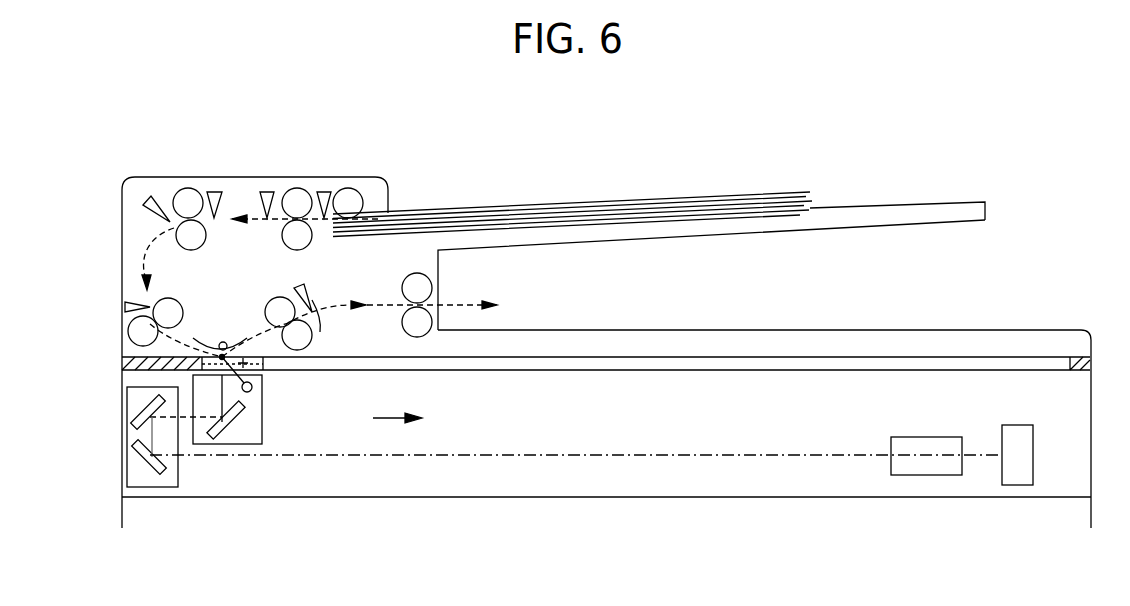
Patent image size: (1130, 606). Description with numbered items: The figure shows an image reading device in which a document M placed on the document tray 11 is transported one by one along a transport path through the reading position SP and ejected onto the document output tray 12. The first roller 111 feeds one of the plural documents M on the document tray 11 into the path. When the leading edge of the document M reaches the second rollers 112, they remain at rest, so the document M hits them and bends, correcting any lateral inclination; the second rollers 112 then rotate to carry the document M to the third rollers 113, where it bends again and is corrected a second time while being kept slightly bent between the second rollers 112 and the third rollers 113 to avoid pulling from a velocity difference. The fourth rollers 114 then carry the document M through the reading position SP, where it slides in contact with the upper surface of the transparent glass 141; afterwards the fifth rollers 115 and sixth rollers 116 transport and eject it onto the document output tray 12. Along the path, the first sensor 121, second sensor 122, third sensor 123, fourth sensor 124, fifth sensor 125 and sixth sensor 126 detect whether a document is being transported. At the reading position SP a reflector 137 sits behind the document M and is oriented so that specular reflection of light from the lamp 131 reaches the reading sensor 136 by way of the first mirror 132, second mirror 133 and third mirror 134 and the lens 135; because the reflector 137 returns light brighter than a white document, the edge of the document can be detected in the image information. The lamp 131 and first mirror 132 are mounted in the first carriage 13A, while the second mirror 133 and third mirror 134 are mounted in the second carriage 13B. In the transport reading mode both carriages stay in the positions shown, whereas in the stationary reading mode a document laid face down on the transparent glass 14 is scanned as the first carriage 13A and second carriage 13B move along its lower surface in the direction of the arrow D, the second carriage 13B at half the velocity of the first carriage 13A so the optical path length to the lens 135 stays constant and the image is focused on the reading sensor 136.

The document tray 11 is at (902, 215).
The document output tray 12 is at (877, 330).
The transparent glass 14 is at (950, 364).
The document M is at (570, 203).
The first roller 111 is at (350, 200).
The second rollers 112 is at (298, 233).
The third rollers 113 is at (189, 233).
The fourth rollers 114 is at (162, 316).
The fifth rollers 115 is at (305, 334).
The sixth rollers 116 is at (408, 320).
The first sensor 121 is at (324, 200).
The second sensor 122 is at (267, 200).
The third sensor 123 is at (214, 200).
The fourth sensor 124 is at (150, 201).
The fifth sensor 125 is at (125, 306).
The sixth sensor 126 is at (300, 286).
The reflector 137 is at (226, 345).
The transparent glass 141 is at (263, 368).
The lamp 131 is at (253, 386).
The first mirror 132 is at (243, 422).
The second mirror 133 is at (143, 402).
The third mirror 134 is at (137, 457).
The lens 135 is at (920, 442).
The reading sensor 136 is at (1013, 433).
The first carriage 13A is at (263, 438).
The second carriage 13B is at (178, 475).
The reading position SP is at (213, 333).
The direction of the arrow D is at (411, 420).